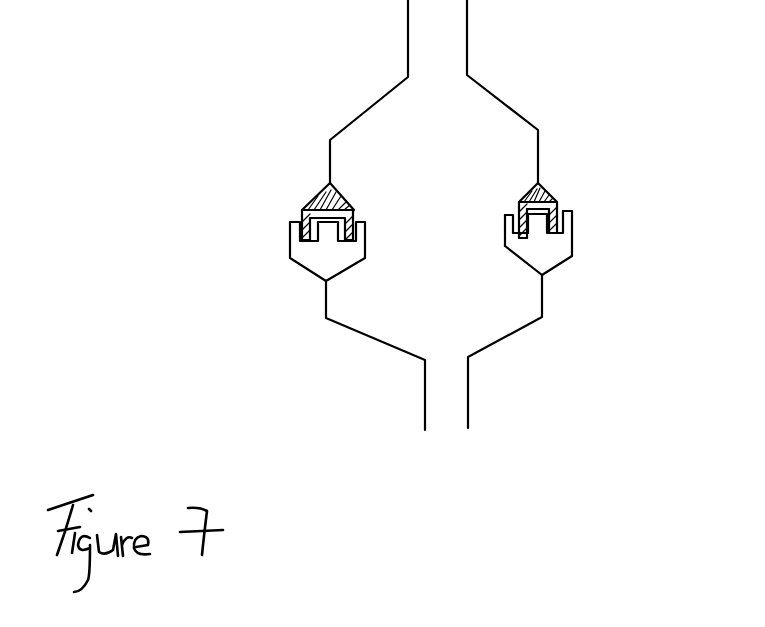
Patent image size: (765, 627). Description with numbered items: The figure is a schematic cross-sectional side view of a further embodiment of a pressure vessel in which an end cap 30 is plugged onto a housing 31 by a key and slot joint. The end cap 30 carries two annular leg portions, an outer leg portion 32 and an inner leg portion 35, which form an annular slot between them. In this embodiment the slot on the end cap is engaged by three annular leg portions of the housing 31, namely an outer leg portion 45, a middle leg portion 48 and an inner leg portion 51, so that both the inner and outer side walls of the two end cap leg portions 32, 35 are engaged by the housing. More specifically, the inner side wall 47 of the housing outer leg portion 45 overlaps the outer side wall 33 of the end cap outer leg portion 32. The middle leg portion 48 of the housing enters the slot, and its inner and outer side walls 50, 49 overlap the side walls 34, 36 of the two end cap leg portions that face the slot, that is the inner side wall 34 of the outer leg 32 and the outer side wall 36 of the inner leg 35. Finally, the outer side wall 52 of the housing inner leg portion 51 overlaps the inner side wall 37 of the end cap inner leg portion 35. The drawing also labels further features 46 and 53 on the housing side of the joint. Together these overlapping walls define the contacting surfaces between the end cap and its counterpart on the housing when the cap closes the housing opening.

The end cap 30 is at (503, 58).
The housing 31 is at (520, 370).
The outer leg portion of the end cap 32 is at (563, 203).
The outer side wall of the outer leg portion 33 is at (563, 200).
The inner side wall of the outer leg 34 is at (567, 202).
The inner leg portion of the end cap 35 is at (515, 195).
The outer side wall of the inner leg 36 is at (520, 205).
The inner side wall of the inner leg portion 37 is at (517, 210).
The outer leg portion of the housing 45 is at (578, 230).
The right outer wall 46 is at (574, 220).
The inner side wall of the outer leg portion of the housing 47 is at (570, 207).
The middle leg portion of the housing 48 is at (538, 233).
The outer side wall of the middle leg portion 49 is at (565, 230).
The inner side wall of the middle leg portion 50 is at (525, 240).
The inner leg portion of the housing 51 is at (497, 243).
The outer side wall of the inner leg portion of the housing 52 is at (517, 250).
The left wall upper part 53 is at (498, 225).